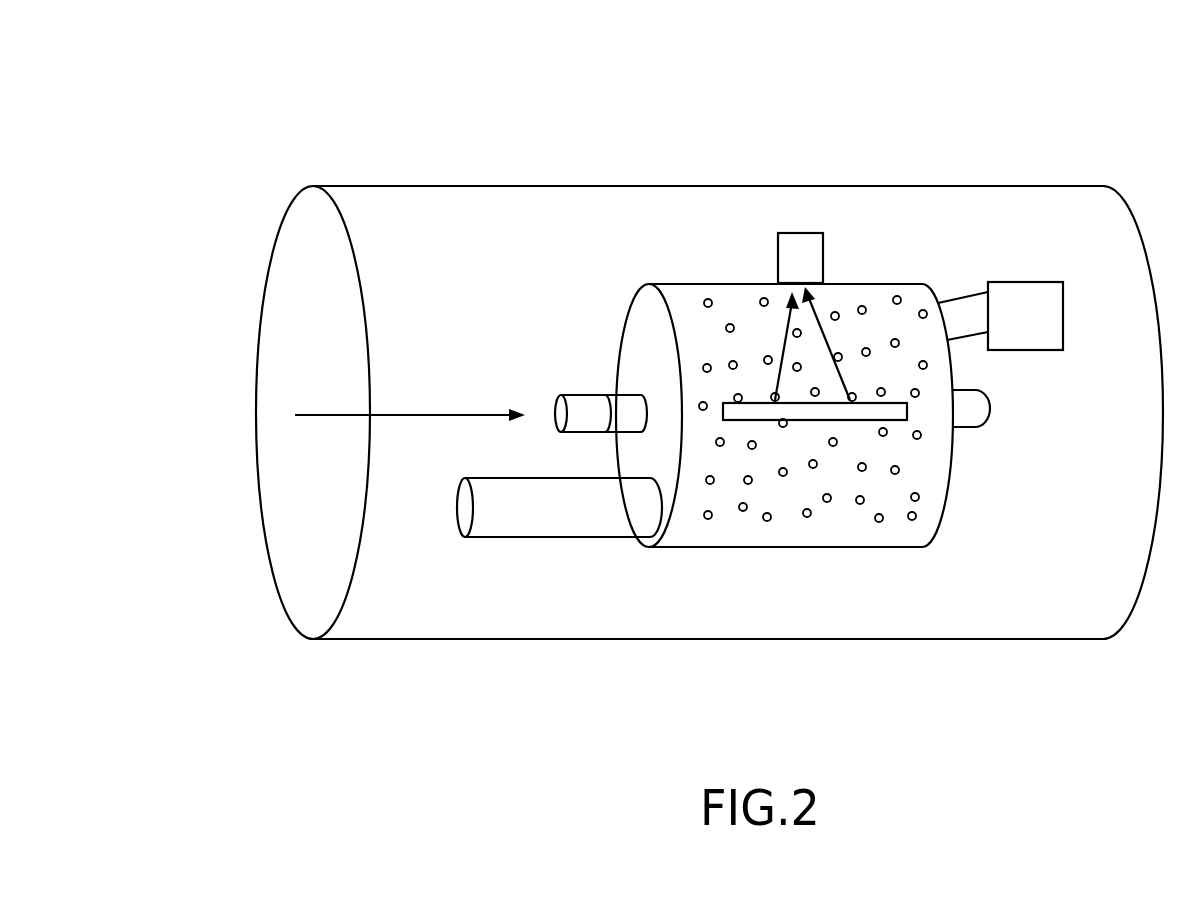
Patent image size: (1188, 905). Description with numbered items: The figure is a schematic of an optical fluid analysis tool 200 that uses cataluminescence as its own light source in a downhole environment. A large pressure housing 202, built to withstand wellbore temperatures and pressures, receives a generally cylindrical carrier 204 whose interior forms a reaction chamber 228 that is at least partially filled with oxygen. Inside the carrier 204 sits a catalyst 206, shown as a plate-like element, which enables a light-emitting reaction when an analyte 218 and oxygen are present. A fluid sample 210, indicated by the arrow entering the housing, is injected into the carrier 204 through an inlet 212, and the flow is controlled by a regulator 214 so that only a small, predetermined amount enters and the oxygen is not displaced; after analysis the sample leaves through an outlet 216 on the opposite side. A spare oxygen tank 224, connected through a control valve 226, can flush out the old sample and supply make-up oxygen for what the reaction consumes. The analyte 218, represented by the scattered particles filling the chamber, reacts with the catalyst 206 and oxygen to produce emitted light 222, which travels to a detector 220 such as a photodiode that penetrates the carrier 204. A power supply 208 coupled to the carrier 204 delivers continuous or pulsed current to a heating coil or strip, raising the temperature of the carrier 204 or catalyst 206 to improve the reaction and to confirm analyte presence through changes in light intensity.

The optical fluid analysis tool 200 is at (1093, 122).
The housing 202 is at (961, 640).
The carrier 204 is at (650, 292).
The catalyst 206 is at (883, 410).
The power supply 208 is at (1045, 332).
The fluid sample 210 is at (351, 413).
The inlet 212 is at (588, 409).
The regulator 214 is at (638, 412).
The outlet 216 is at (968, 413).
The analyte 218 is at (764, 336).
The detector 220 is at (818, 272).
The emitted light 222 is at (830, 340).
The spare oxygen tank 224 is at (573, 522).
The control valve 226 is at (644, 519).
The reaction chamber 228 is at (791, 536).